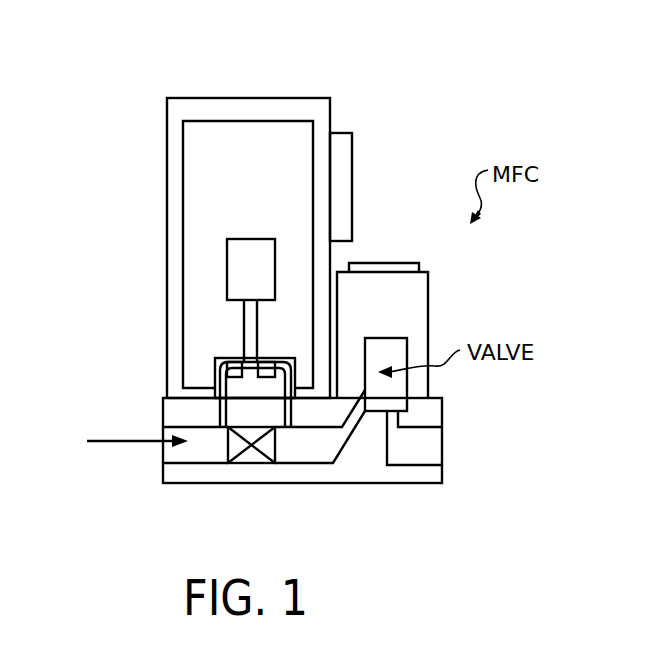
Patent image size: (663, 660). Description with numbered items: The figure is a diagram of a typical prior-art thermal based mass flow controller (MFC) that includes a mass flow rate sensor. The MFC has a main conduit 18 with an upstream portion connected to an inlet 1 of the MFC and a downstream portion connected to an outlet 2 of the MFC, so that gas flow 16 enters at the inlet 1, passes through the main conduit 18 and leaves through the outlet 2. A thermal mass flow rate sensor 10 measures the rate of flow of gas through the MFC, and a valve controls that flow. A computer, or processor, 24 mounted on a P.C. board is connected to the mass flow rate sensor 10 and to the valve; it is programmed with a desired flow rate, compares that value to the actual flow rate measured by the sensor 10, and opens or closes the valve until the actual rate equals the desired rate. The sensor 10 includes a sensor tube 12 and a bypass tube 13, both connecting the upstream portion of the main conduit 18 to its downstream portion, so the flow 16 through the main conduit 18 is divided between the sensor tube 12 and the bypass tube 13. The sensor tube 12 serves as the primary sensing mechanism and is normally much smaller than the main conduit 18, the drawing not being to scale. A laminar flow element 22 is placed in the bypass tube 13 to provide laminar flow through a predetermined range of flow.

The inlet 1 is at (163, 452).
The outlet 2 is at (442, 449).
The mass flow rate sensor 10 is at (210, 350).
The sensor tube 12 is at (215, 383).
The bypass tube 13 is at (207, 452).
The flow 16 is at (115, 439).
The main conduit 18 is at (322, 478).
The laminar flow element 22 is at (252, 470).
The computer 24 is at (227, 255).